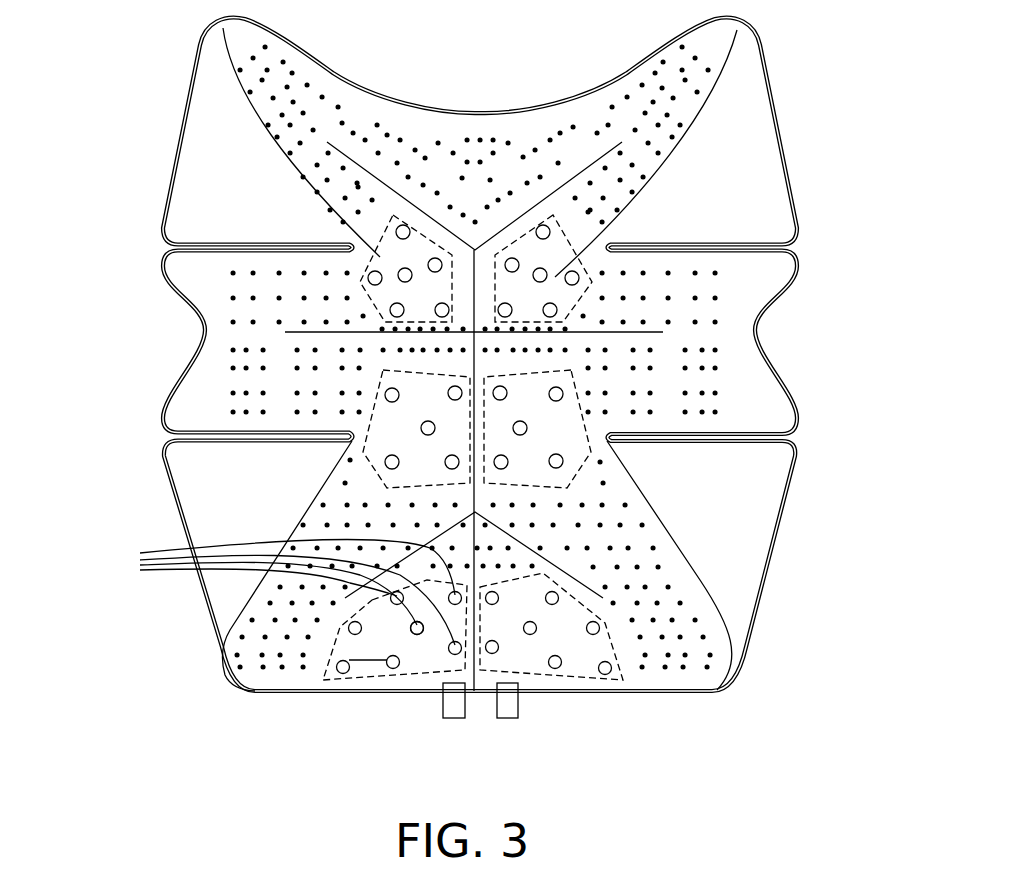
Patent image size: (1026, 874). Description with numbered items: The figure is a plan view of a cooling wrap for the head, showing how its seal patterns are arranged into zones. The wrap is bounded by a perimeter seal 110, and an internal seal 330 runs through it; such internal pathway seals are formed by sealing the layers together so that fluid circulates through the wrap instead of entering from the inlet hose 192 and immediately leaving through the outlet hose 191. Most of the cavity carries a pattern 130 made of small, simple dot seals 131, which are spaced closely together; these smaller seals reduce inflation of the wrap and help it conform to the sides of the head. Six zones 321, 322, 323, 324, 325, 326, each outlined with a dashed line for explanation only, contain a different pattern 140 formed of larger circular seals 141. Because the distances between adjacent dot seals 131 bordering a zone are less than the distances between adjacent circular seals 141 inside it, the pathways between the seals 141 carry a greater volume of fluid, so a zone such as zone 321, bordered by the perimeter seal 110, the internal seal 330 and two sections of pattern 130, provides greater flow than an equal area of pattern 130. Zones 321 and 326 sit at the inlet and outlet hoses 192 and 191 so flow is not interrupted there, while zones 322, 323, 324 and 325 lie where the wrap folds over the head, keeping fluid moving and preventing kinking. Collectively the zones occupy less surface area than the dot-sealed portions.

The garment body 110 is at (313, 693).
The strap 130 is at (444, 545).
The perforation 131 is at (282, 669).
The electrode 140 is at (418, 646).
The conductive wiring 141 is at (275, 592).
The first connector 191 is at (517, 712).
The second connector 192 is at (452, 719).
The electrode region 321 is at (395, 630).
The electrode region 322 is at (392, 417).
The electrode region 323 is at (378, 256).
The electrode region 324 is at (600, 227).
The electrode region 325 is at (547, 423).
The electrode region 326 is at (583, 648).
The center seam 330 is at (484, 681).